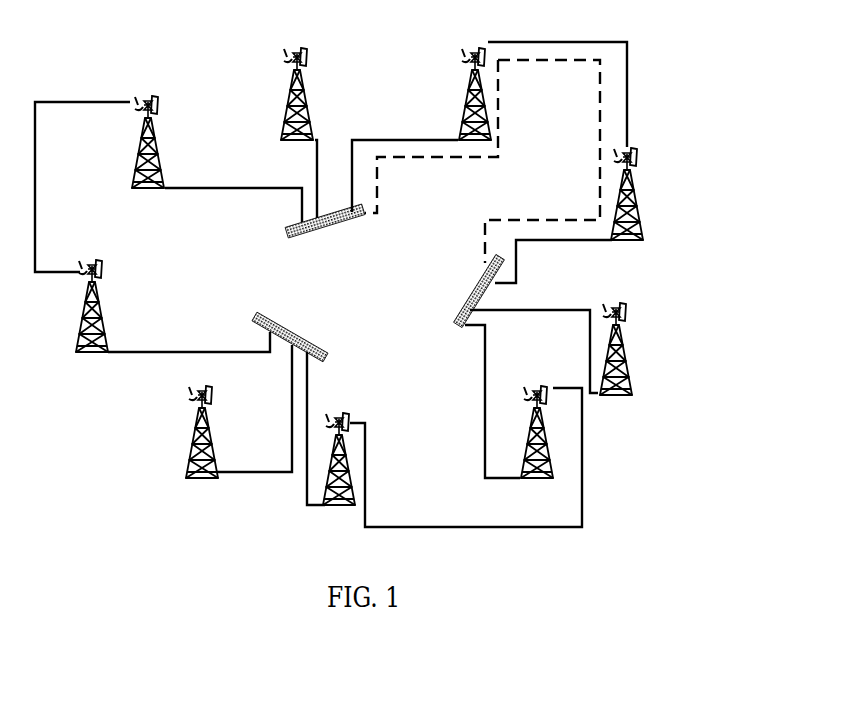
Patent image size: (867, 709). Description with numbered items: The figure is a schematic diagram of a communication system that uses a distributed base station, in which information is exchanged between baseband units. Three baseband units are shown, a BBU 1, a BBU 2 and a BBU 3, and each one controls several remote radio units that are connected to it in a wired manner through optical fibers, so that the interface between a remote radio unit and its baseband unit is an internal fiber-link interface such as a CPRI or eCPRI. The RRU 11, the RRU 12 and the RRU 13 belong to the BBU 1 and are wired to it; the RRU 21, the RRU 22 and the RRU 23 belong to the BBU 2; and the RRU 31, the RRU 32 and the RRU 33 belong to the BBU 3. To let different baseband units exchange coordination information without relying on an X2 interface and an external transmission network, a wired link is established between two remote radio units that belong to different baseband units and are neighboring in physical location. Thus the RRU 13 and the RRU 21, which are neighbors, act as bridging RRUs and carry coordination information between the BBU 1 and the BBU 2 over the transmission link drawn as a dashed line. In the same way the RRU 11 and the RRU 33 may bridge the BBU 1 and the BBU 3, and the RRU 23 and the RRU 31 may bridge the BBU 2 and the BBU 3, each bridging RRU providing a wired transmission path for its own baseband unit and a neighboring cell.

The RRU 11 is at (152, 128).
The RRU 12 is at (299, 74).
The RRU 13 is at (474, 70).
The RRU 21 is at (674, 193).
The RRU 22 is at (616, 328).
The RRU 23 is at (530, 450).
The RRU 31 is at (355, 445).
The RRU 32 is at (203, 418).
The RRU 33 is at (93, 285).
The BBU 1 is at (328, 239).
The BBU 2 is at (302, 331).
The BBU 3 is at (452, 290).